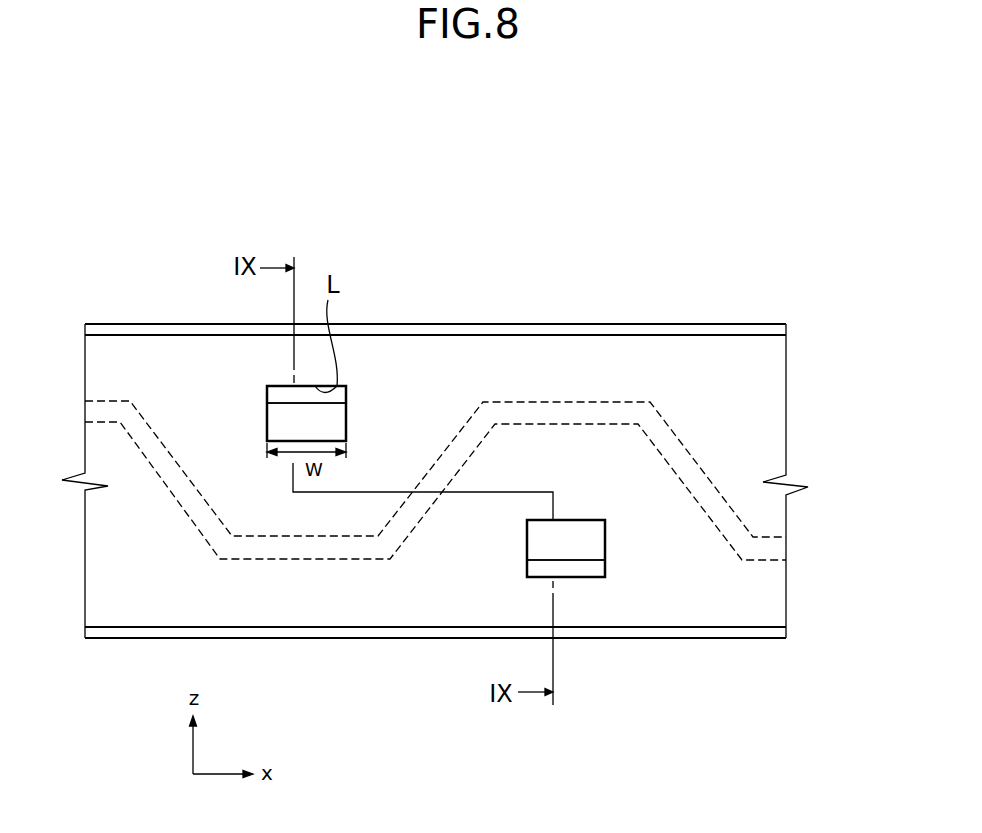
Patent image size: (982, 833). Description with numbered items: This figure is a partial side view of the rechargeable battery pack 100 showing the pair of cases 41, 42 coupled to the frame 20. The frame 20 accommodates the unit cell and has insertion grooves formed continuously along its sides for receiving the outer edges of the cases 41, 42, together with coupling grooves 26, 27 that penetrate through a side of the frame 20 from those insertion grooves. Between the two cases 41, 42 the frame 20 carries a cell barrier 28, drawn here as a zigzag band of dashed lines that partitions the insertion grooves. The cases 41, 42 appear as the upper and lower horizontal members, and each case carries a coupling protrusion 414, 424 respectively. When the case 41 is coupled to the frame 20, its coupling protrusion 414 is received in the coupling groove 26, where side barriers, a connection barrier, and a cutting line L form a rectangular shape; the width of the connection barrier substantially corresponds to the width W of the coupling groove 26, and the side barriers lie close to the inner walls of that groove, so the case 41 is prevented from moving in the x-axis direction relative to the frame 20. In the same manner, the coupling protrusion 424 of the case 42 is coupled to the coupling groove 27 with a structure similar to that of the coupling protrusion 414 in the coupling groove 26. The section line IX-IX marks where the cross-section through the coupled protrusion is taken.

The rechargeable battery pack 100 is at (481, 215).
The frame 20 is at (786, 508).
The case 41 is at (585, 333).
The case 42 is at (311, 638).
The coupling protrusion 414 is at (356, 395).
The coupling protrusion 424 is at (583, 585).
The coupling groove 26 is at (267, 425).
The coupling groove 27 is at (605, 535).
The cell barrier 28 is at (418, 523).